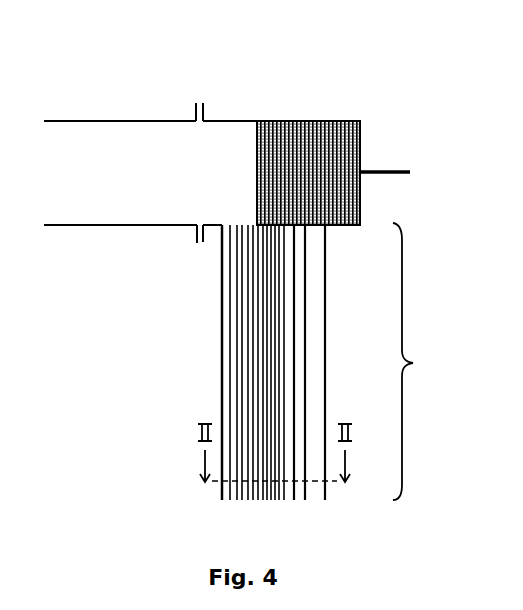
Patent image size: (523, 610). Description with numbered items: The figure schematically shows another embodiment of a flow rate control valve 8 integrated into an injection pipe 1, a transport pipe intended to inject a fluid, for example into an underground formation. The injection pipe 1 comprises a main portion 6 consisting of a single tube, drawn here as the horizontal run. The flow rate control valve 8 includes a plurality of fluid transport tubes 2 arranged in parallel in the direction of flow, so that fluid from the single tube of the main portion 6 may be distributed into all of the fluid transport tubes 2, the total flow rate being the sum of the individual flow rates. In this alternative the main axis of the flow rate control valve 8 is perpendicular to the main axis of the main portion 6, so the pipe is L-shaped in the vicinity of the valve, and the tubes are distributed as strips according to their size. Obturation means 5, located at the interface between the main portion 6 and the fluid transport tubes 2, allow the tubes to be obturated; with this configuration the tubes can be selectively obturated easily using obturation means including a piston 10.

The injection pipe 1 is at (252, 87).
The fluid transport tubes 2 is at (237, 328).
The obturation means 5 is at (196, 234).
The main portion 6 is at (90, 141).
The flow rate control valve 8 is at (412, 361).
The piston 10 is at (331, 140).